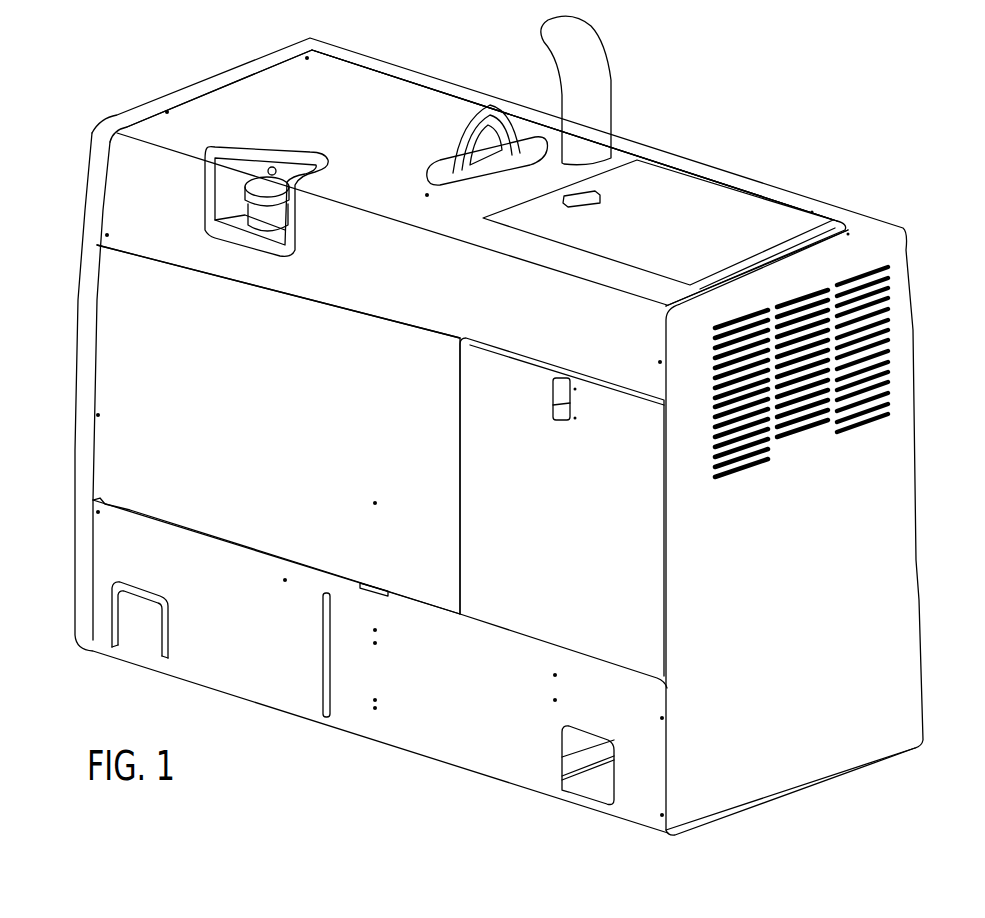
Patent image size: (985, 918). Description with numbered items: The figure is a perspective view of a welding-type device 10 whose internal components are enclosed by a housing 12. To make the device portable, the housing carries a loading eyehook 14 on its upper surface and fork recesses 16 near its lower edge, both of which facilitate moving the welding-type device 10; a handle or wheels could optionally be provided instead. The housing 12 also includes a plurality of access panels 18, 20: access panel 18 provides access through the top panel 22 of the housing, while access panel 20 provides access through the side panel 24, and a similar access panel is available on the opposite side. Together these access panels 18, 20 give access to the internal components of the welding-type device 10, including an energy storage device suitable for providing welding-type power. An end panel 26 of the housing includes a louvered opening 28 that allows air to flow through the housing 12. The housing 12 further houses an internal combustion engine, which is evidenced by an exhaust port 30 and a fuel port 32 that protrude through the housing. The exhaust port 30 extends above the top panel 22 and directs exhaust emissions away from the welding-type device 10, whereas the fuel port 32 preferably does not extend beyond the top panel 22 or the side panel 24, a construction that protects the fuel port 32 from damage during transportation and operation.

The welding-type device 10 is at (862, 97).
The housing 12 is at (777, 177).
The loading eyehook 14 is at (481, 110).
The fork recesses 16 is at (133, 645).
The access panel 18 is at (668, 227).
The access panel 20 is at (575, 542).
The top panel 22 is at (385, 131).
The side panel 24 is at (273, 418).
The end panel 26 is at (816, 572).
The louvered opening 28 is at (920, 402).
The exhaust port 30 is at (586, 52).
The fuel port 32 is at (211, 250).